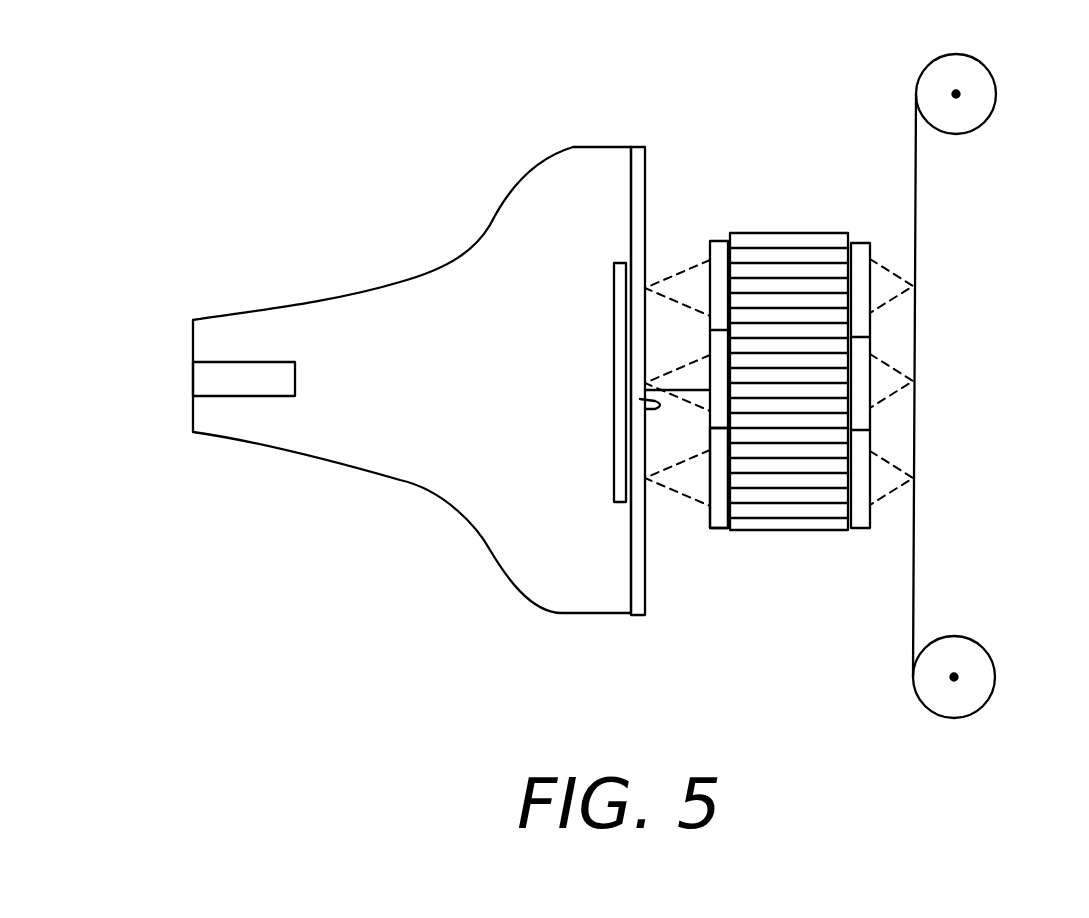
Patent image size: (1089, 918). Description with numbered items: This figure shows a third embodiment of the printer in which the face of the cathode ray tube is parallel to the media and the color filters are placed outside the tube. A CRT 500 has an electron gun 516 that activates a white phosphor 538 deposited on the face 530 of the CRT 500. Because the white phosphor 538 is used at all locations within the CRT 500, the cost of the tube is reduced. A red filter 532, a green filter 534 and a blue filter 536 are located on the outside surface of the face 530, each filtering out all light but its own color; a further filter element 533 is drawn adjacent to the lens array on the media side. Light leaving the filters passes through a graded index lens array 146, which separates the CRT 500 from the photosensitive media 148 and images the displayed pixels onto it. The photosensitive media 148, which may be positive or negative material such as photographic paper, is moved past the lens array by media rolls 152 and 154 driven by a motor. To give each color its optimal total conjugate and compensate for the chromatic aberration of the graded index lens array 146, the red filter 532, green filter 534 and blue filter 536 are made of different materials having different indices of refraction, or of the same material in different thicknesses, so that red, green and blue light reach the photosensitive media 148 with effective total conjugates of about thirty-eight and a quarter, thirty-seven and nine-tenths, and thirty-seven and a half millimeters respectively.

The CRT 500 is at (412, 380).
The electron gun 516 is at (282, 354).
The face 530 is at (638, 147).
The red filter 532 is at (687, 349).
The lens array 533 is at (881, 334).
The green filter 534 is at (645, 409).
The blue filter 536 is at (686, 499).
The white phosphor 538 is at (559, 382).
The graded index lens array 146 is at (789, 347).
The photosensitive media 148 is at (973, 385).
The media roll 152 is at (983, 649).
The media roll 154 is at (991, 77).